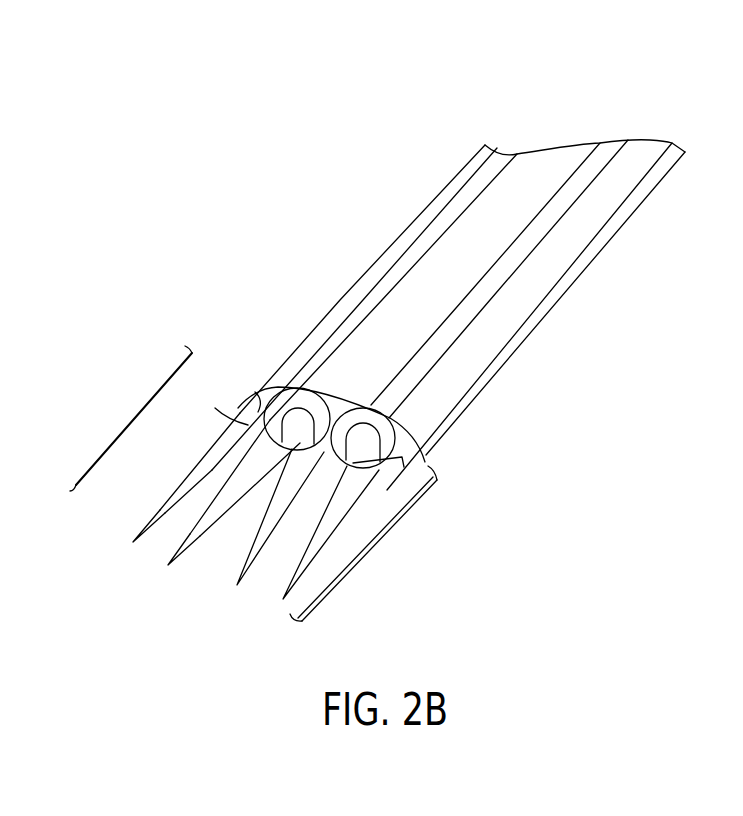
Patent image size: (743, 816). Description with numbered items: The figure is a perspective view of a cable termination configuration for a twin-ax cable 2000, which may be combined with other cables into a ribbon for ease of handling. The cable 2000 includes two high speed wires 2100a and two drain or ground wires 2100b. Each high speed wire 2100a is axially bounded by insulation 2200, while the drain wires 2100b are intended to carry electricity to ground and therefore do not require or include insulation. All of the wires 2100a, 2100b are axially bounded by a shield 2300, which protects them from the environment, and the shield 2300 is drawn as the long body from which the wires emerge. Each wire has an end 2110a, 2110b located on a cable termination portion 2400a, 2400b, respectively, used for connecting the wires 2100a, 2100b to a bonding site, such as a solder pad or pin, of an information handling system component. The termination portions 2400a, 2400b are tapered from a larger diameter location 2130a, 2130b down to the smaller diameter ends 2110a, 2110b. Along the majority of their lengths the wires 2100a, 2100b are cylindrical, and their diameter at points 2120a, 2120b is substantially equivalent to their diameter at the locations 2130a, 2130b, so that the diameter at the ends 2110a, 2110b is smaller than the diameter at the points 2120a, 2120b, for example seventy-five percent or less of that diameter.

The twin-ax cable 2000 is at (388, 137).
The high speed wires 2100a is at (196, 543).
The drain wires 2100b is at (158, 520).
The ends of high speed wires 2110a is at (168, 566).
The ends of drain wires 2110b is at (133, 542).
The points on high speed wires 2120a is at (308, 408).
The points on drain wires 2120b is at (250, 408).
The larger diameter locations of high speed wires 2130a is at (262, 397).
The larger diameter locations of drain wires 2130b is at (246, 427).
The insulation 2200 is at (368, 407).
The shield 2300 is at (377, 260).
The cable termination portions of high speed wires 2400a is at (365, 548).
The cable termination portions of drain wires 2400b is at (137, 412).